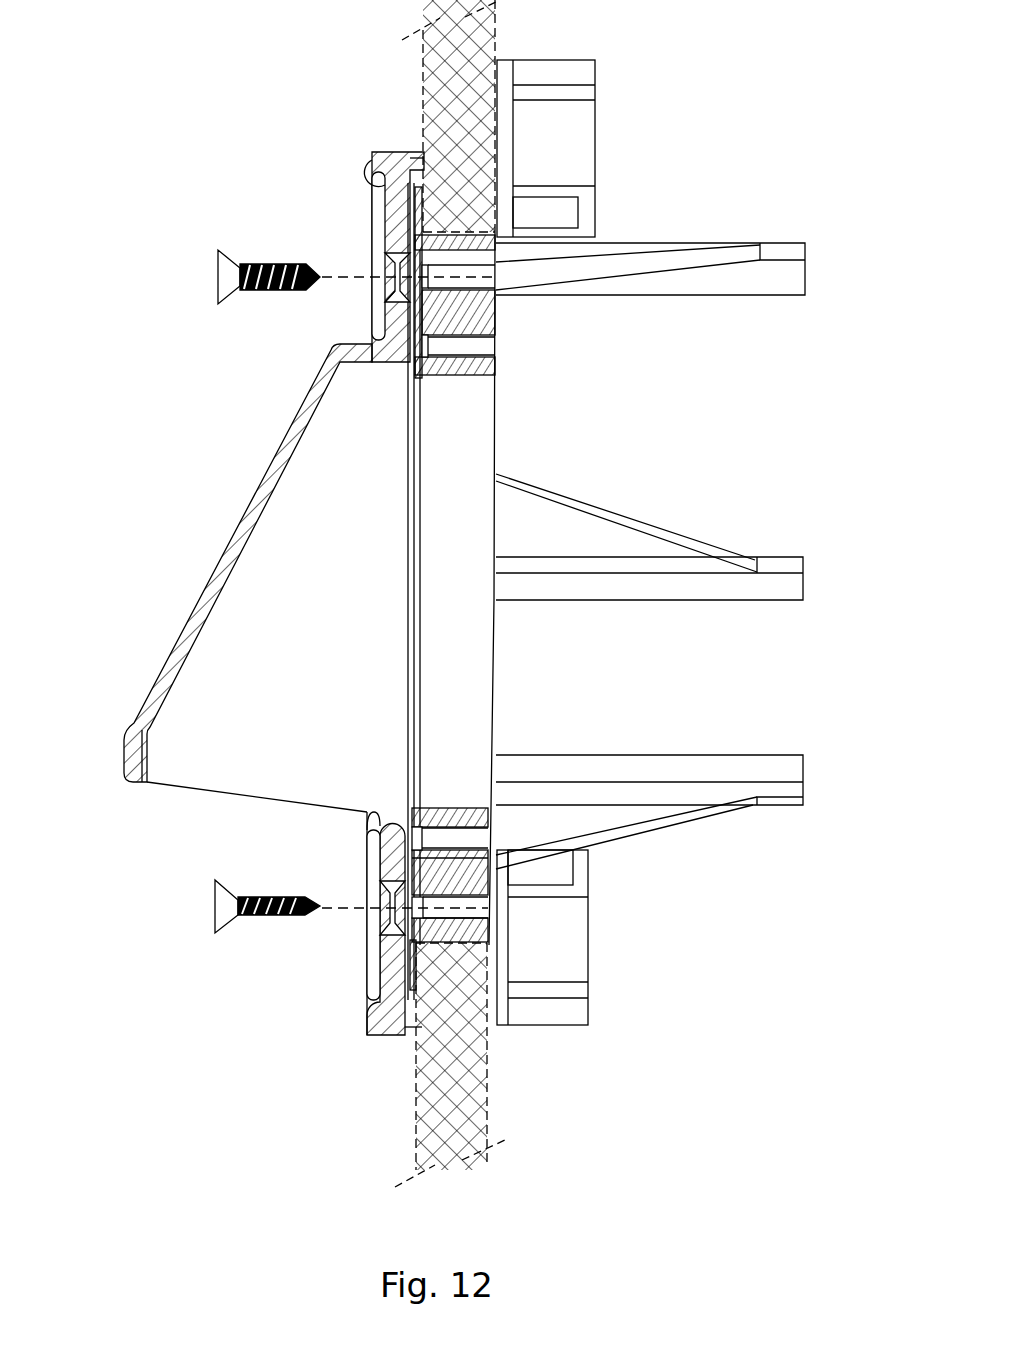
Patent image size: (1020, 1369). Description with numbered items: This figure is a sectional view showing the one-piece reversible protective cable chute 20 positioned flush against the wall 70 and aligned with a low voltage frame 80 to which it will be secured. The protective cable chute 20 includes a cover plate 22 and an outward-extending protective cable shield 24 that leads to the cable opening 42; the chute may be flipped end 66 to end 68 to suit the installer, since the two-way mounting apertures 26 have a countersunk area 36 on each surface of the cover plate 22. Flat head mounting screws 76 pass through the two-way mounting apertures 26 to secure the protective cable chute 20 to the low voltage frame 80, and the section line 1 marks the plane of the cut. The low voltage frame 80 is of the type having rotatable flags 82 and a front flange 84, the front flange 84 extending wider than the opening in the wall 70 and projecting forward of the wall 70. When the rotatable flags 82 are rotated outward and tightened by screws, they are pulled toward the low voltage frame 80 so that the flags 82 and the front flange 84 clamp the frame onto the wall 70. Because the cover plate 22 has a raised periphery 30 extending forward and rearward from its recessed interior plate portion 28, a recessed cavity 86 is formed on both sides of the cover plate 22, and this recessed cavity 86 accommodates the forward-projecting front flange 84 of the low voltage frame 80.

The section line 1 is at (450, 593).
The protective cable chute 20 is at (247, 593).
The cover plate 22 is at (323, 550).
The protective cable shield 24 is at (220, 565).
The two-way mounting apertures 26 is at (390, 266).
The interior plate portion 28 is at (415, 313).
The raised periphery 30 is at (436, 158).
The countersunk area 36 is at (392, 292).
The cable opening 42 is at (217, 770).
The end 66 is at (400, 152).
The end 68 is at (398, 1035).
The wall 70 is at (455, 78).
The flat head mounting screws 76 is at (260, 264).
The low voltage frame 80 is at (469, 562).
The rotatable flags 82 is at (595, 66).
The front flange 84 is at (425, 187).
The recessed cavity 86 is at (410, 188).